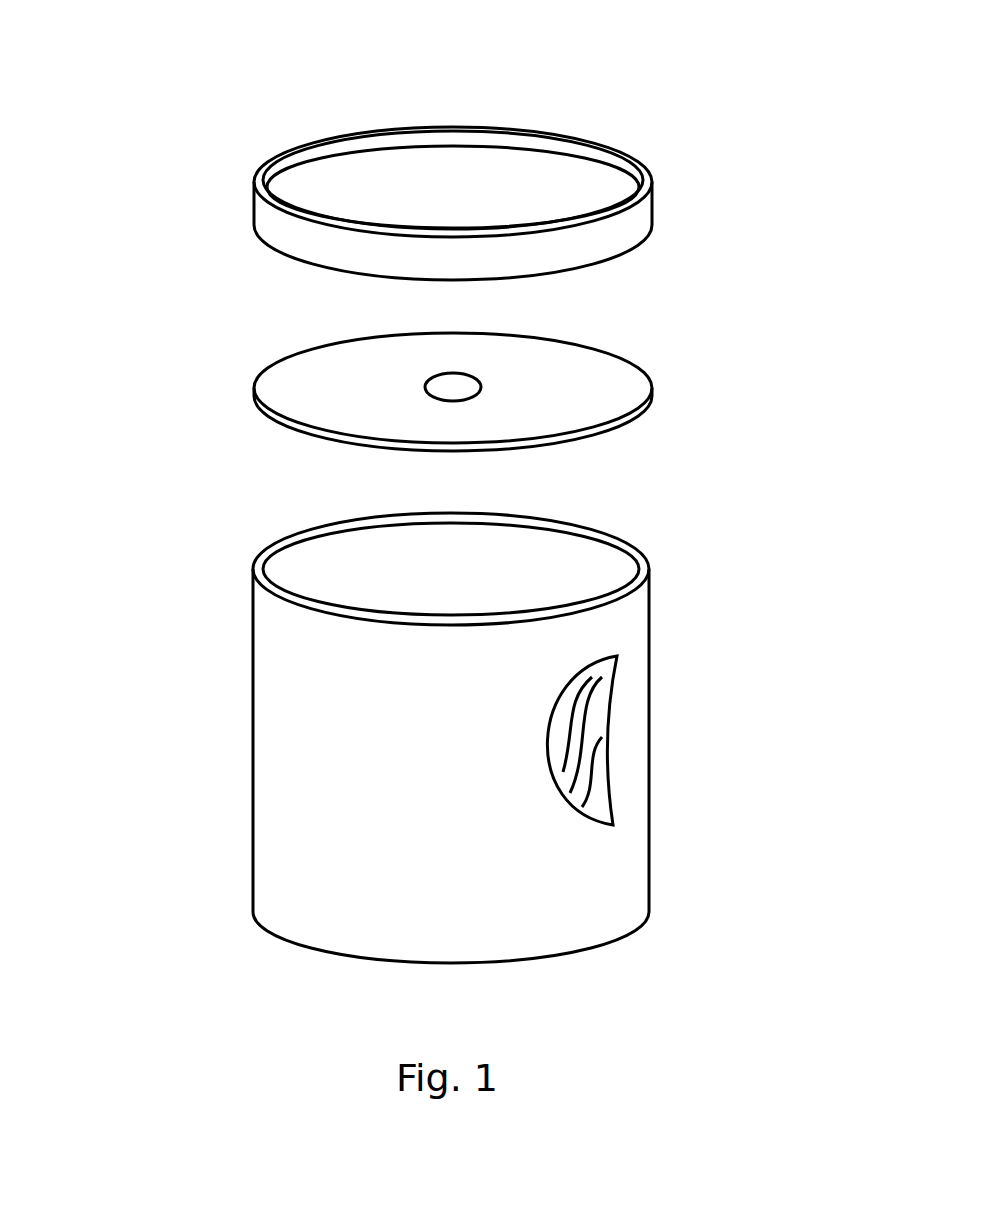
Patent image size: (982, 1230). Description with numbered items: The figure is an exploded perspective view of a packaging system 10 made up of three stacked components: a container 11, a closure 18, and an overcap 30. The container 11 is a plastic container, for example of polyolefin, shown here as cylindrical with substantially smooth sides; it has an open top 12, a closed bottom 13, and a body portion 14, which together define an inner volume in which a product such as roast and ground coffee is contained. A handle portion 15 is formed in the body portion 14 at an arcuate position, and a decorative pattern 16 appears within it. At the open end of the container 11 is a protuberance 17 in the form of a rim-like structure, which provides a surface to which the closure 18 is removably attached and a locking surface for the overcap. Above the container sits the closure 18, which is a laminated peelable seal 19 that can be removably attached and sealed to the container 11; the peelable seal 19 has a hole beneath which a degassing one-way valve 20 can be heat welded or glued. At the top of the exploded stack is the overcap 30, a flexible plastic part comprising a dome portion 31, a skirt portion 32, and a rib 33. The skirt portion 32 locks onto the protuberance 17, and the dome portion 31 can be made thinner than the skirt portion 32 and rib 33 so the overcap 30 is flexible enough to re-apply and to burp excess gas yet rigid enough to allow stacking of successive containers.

The packaging system 10 is at (172, 716).
The container 11 is at (479, 747).
The open top 12 is at (320, 557).
The closed bottom 13 is at (403, 963).
The body portion 14 is at (270, 830).
The handle portion 15 is at (582, 782).
The decorative design in window 16 is at (588, 703).
The protuberance 17 is at (645, 562).
The closure 18 is at (522, 362).
The peelable seal 19 is at (335, 357).
The one-way valve 20 is at (473, 372).
The overcap 30 is at (553, 147).
The dome portion 31 is at (432, 182).
The skirt portion 32 is at (615, 232).
The rib 33 is at (573, 147).